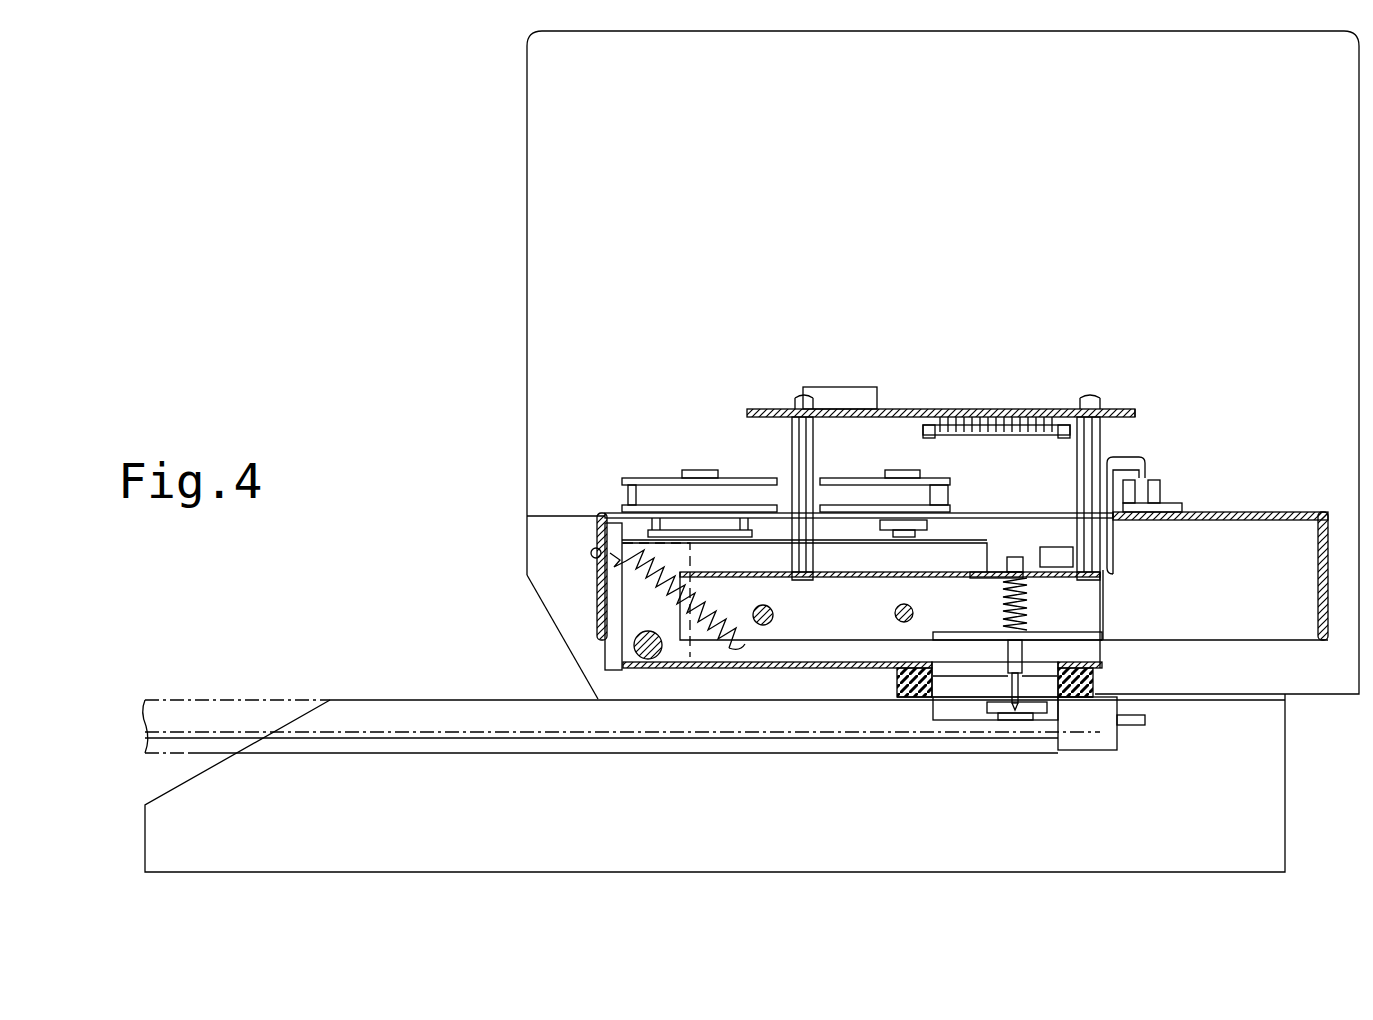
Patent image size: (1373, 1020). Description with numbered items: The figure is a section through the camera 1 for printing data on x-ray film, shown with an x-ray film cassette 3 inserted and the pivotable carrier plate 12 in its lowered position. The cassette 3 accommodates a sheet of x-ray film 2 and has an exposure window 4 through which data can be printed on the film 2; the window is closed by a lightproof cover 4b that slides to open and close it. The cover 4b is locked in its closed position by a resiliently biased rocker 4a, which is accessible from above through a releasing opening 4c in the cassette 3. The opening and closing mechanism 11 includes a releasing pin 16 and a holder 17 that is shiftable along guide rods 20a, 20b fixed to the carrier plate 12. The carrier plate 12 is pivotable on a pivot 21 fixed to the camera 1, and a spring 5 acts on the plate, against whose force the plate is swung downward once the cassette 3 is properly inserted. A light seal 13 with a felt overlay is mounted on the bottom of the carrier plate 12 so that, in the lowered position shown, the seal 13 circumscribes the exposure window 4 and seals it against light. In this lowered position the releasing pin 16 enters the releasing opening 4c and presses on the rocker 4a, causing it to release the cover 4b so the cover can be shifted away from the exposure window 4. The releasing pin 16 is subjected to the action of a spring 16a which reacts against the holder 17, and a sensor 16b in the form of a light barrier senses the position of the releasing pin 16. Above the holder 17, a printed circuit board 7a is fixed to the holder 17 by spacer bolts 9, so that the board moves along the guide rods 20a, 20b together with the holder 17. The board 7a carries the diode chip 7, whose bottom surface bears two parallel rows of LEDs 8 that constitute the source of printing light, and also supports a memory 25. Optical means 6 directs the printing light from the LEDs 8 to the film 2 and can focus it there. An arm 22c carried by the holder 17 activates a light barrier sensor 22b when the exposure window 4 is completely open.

The camera 1 is at (517, 247).
The x-ray film 2 is at (385, 735).
The x-ray film cassette 3 is at (226, 700).
The exposure window 4 is at (930, 705).
The rocker 4a is at (1030, 718).
The lightproof cover 4b is at (1050, 703).
The releasing opening 4c is at (990, 705).
The spring 5 is at (620, 598).
The optical means 6 is at (1003, 557).
The diode chip 7 is at (930, 409).
The printed circuit board 7a is at (1110, 409).
The LEDs 8 is at (943, 436).
The spacer bolts 9 is at (790, 447).
The opening and closing mechanism 11 is at (1175, 605).
The carrier plate 12 is at (720, 668).
The light seal 13 is at (897, 682).
The releasing pin 16 is at (1093, 681).
The spring 16a is at (1027, 605).
The sensor 16b is at (1065, 558).
The holder 17 is at (952, 632).
The guide rod 20a is at (893, 617).
The guide rod 20b is at (775, 615).
The pivot 21 is at (634, 648).
The sensor 22b is at (1157, 490).
The arm 22c is at (1143, 478).
The memory 25 is at (834, 395).